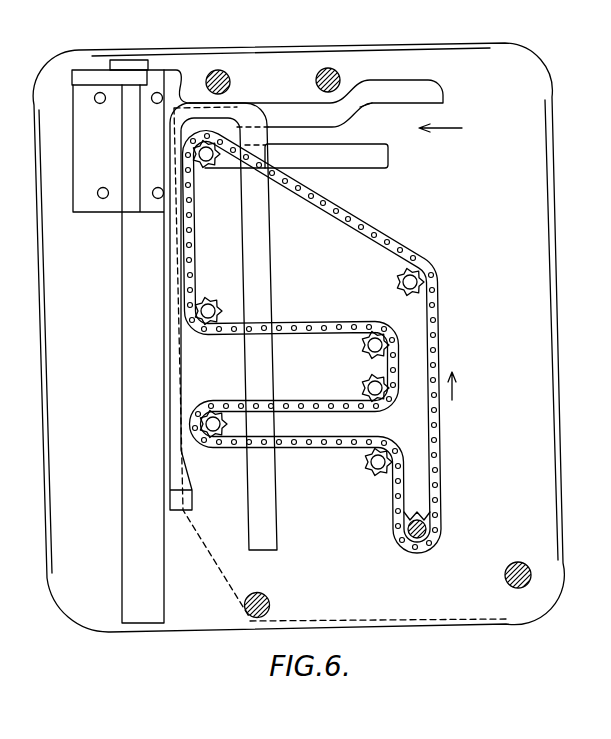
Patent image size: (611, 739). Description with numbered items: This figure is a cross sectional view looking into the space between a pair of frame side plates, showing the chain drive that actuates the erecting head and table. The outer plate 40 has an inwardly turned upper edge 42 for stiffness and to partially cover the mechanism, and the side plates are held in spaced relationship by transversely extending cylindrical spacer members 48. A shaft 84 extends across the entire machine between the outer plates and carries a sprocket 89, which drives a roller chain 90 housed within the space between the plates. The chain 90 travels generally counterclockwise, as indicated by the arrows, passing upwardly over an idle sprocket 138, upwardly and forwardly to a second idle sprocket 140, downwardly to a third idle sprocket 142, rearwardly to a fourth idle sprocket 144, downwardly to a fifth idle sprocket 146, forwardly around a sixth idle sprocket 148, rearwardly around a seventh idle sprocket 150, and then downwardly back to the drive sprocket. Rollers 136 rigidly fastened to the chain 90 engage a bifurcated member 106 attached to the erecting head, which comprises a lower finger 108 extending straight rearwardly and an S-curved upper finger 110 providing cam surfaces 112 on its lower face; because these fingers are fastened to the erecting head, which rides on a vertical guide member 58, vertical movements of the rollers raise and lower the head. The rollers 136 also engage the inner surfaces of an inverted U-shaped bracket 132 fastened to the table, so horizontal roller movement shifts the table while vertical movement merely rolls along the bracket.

The outer plate 40 is at (63, 82).
The inwardly turned upper edge 42 is at (137, 58).
The cylindrical spacer member 48 is at (316, 76).
The guide member 58 is at (128, 352).
The shaft 84 is at (427, 533).
The sprocket 89 is at (432, 517).
The roller chain 90 is at (357, 226).
The bifurcated member 106 is at (459, 128).
The lower finger 108 is at (389, 160).
The upper finger 110 is at (293, 111).
The cam surface 112 is at (359, 108).
The inverted U-shaped bracket 132 is at (258, 250).
The roller 136 is at (253, 156).
The idle sprocket 138 is at (396, 284).
The second idle sprocket 140 is at (215, 178).
The third idle sprocket 142 is at (210, 300).
The fourth idle sprocket 144 is at (362, 352).
The fifth idle sprocket 146 is at (360, 388).
The sixth idle sprocket 148 is at (225, 445).
The seventh idle sprocket 150 is at (364, 470).